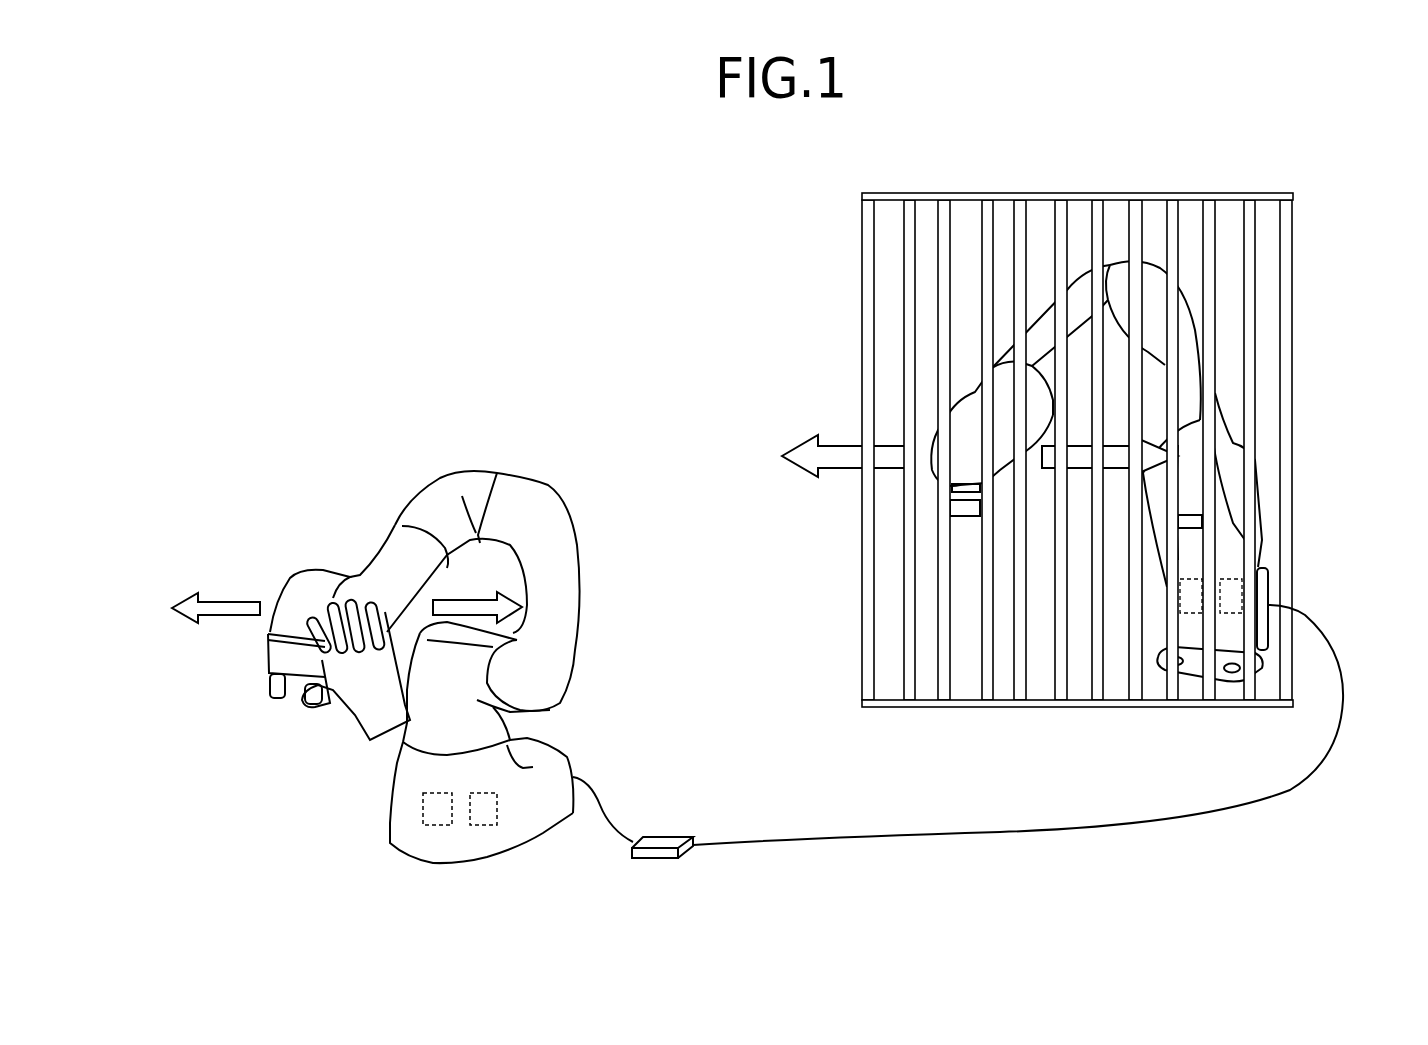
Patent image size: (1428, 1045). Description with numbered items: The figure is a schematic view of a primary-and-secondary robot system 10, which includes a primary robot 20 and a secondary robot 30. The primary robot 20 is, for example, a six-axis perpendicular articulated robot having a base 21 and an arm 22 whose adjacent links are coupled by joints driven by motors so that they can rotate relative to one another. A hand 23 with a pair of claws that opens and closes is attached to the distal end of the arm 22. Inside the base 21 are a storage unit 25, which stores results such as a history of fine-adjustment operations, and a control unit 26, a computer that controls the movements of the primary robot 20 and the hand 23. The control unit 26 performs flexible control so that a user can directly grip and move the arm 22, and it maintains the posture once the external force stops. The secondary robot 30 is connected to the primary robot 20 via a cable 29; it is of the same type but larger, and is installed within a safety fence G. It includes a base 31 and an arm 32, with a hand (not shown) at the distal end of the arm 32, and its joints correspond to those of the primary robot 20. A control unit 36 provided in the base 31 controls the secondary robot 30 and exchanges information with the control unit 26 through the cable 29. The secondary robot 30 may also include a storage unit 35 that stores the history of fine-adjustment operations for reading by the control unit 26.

The primary-and-secondary robot system 10 is at (1315, 162).
The primary robot 20 is at (627, 402).
The base 21 is at (390, 793).
The arm 22 is at (547, 467).
The hand 23 is at (265, 650).
The storage unit 25 is at (483, 825).
The control unit 26 is at (437, 825).
The cable 29 is at (823, 838).
The secondary robot 30 is at (1332, 273).
The base 31 is at (1198, 627).
The arm 32 is at (1147, 235).
The storage unit 35 is at (1232, 579).
The control unit 36 is at (1190, 579).
The safety fence G is at (863, 262).